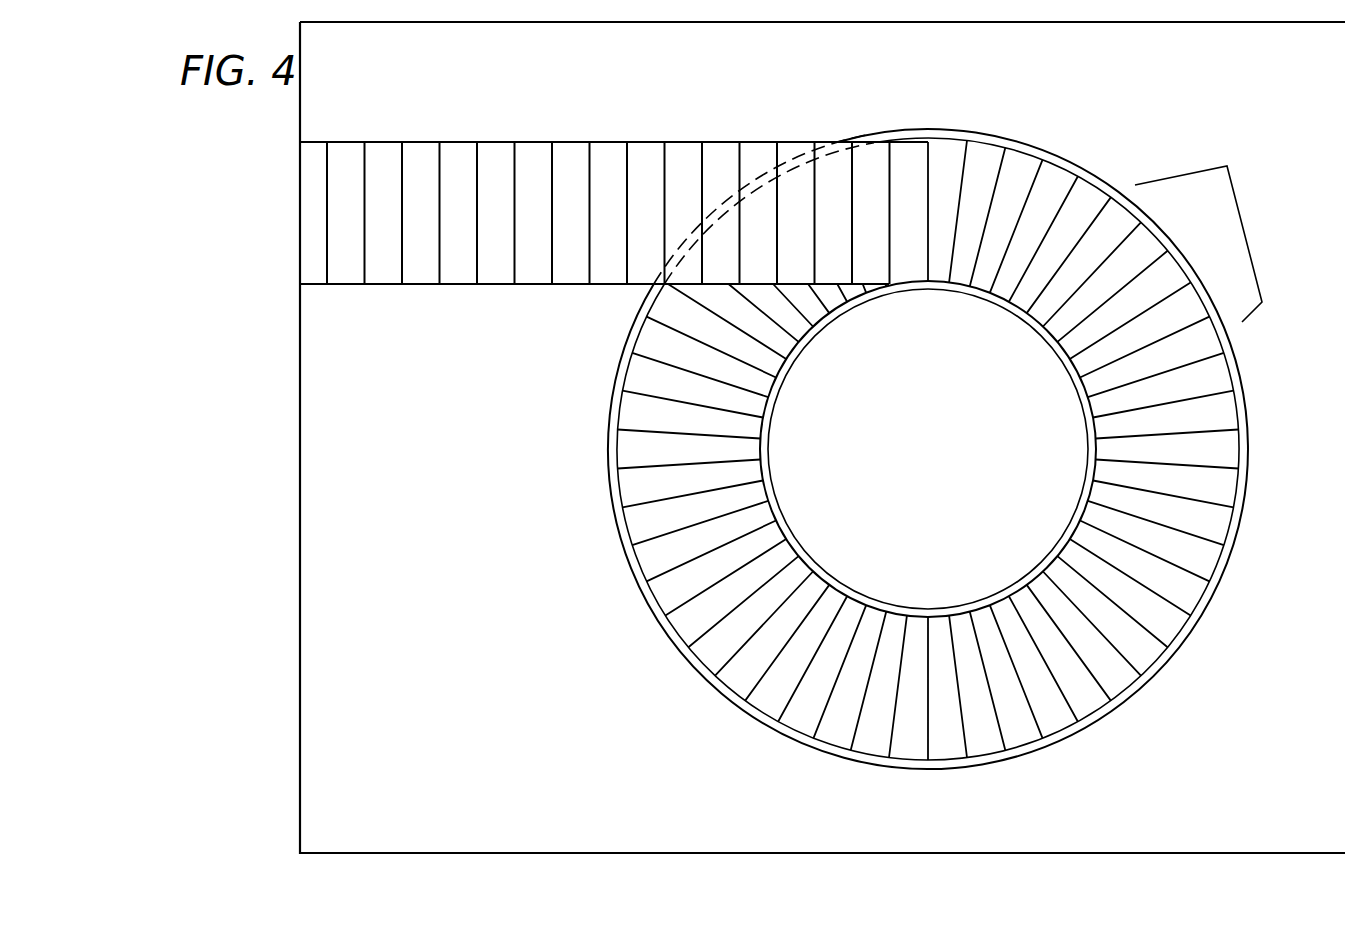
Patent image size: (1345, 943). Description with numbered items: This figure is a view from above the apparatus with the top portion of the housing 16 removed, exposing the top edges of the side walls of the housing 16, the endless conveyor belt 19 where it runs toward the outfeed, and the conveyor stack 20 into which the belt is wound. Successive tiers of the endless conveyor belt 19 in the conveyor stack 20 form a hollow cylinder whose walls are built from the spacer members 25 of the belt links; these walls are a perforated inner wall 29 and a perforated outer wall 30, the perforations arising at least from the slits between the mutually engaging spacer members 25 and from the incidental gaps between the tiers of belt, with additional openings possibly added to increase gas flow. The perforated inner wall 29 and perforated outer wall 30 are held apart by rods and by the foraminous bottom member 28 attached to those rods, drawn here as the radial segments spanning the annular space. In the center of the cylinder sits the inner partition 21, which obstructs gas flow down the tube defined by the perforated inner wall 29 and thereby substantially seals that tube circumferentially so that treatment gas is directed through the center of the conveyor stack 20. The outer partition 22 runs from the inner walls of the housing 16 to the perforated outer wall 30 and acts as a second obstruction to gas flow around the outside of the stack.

The housing 16 is at (1165, 852).
The endless conveyor belt 19 is at (565, 127).
The conveyor stack 20 is at (1247, 233).
The inner partition 21 is at (948, 463).
The outer partition 22 is at (929, 437).
The spacer members 25 is at (929, 452).
The foraminous bottom member 28 is at (1055, 175).
The perforated inner wall 29 is at (928, 449).
The perforated outer wall 30 is at (758, 720).